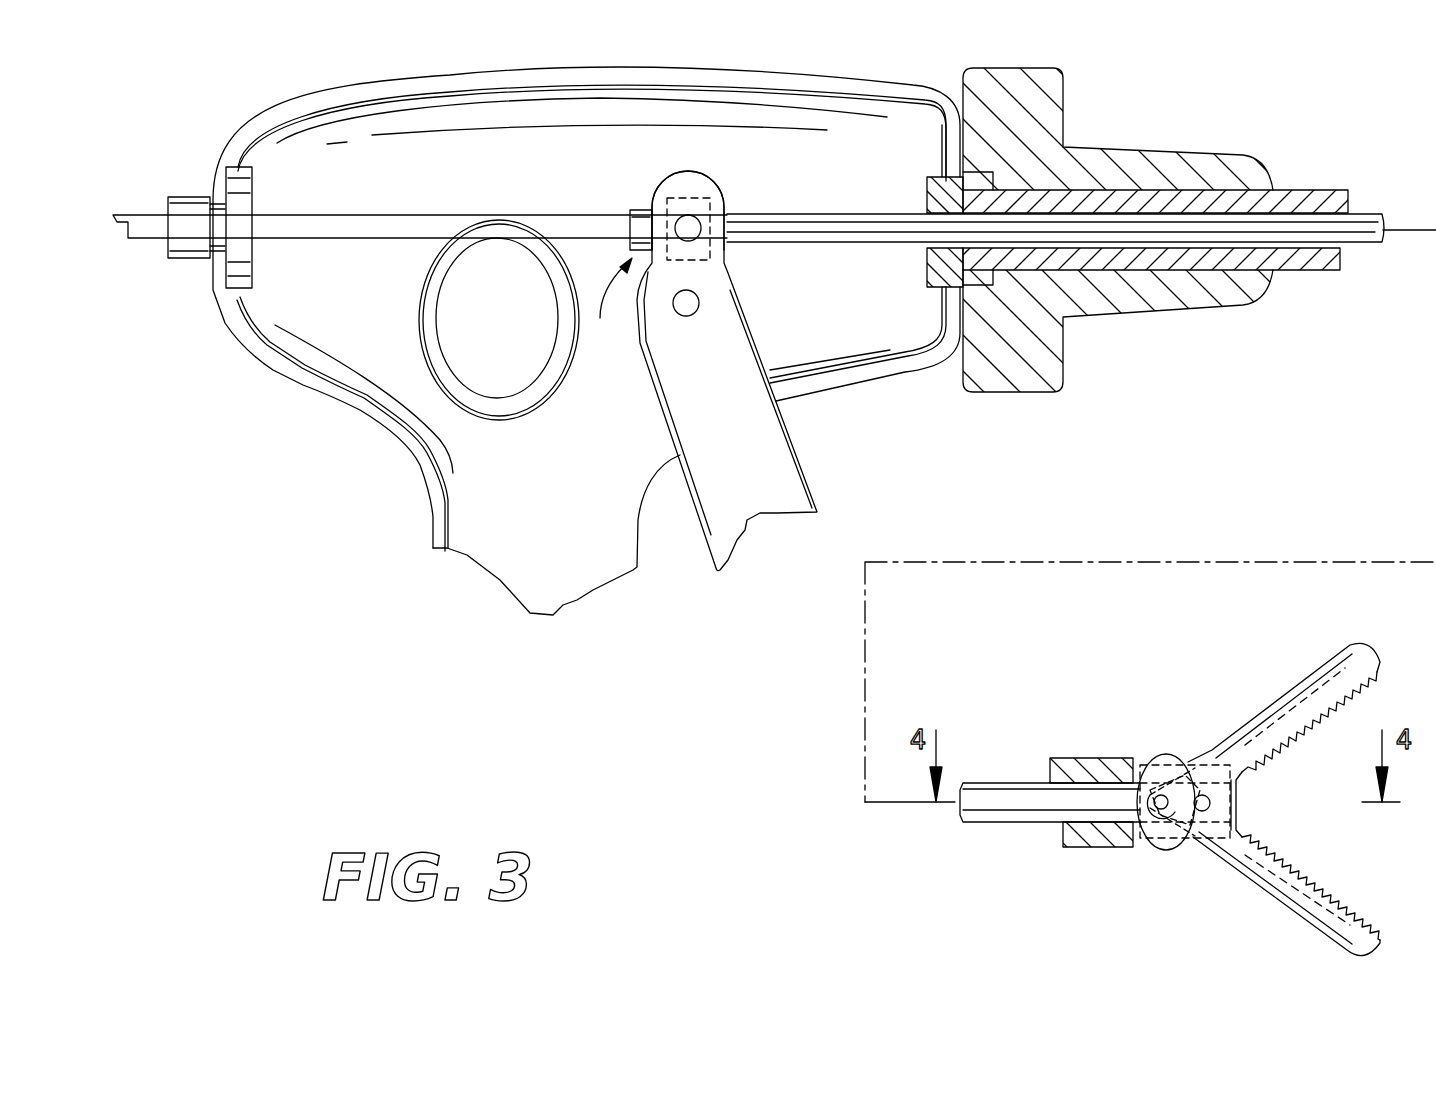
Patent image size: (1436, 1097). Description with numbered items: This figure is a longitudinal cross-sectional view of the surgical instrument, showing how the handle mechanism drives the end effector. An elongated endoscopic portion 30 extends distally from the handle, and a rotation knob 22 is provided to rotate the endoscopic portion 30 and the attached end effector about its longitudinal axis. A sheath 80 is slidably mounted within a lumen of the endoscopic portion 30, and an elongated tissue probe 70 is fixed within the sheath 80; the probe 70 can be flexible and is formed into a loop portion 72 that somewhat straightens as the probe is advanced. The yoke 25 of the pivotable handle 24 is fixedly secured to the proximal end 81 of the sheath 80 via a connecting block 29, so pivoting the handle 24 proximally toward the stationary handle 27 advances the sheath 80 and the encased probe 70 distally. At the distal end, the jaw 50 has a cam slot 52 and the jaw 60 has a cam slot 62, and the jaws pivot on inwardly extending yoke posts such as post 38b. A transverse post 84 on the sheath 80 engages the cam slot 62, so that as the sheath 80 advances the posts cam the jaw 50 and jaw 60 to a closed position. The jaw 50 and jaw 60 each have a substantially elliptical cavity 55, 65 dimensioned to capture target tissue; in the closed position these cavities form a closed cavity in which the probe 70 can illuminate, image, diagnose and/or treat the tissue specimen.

The rotation knob 22 is at (1037, 87).
The pivotable handle 24 is at (763, 460).
The yoke 25 is at (675, 182).
The stationary handle 27 is at (592, 545).
The connecting block 29 is at (697, 203).
The endoscopic portion 30 is at (1157, 203).
The post 38b is at (1202, 795).
The jaw 50 is at (1284, 734).
The cam slot 52 is at (1188, 827).
The cavity 55 is at (1283, 733).
The jaw 60 is at (1286, 897).
The cam slot 62 is at (1188, 793).
The cavity 65 is at (1303, 882).
The tissue probe 70 is at (583, 215).
The loop portion 72 is at (503, 408).
The sheath 80 is at (873, 223).
The proximal end 81 is at (607, 301).
The post 84 is at (1160, 812).